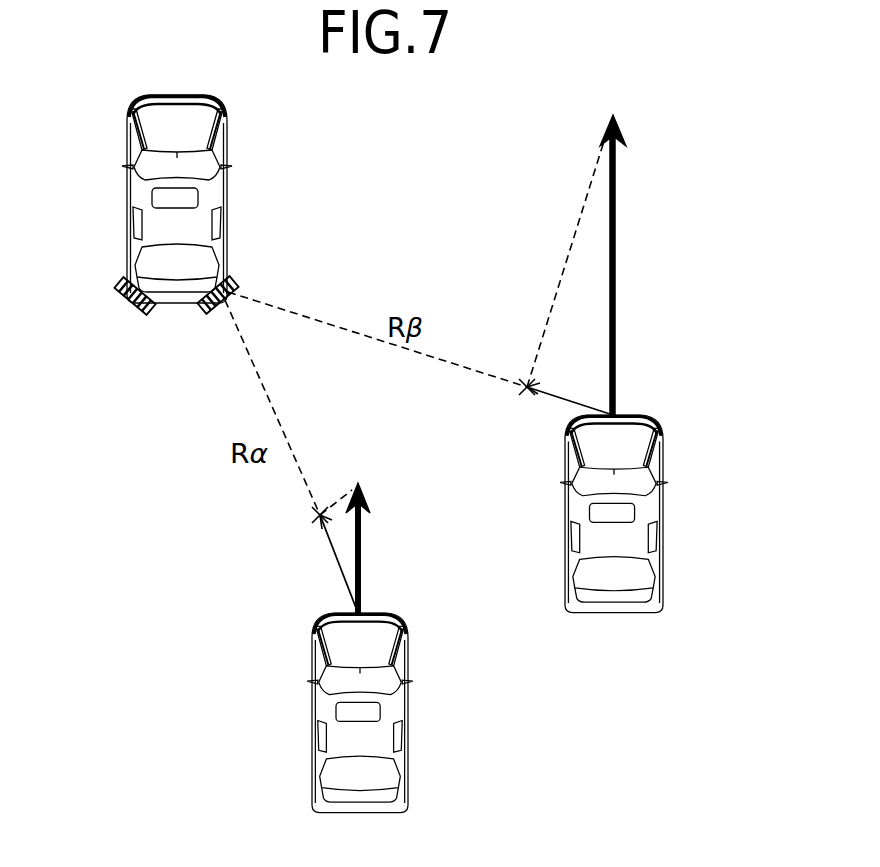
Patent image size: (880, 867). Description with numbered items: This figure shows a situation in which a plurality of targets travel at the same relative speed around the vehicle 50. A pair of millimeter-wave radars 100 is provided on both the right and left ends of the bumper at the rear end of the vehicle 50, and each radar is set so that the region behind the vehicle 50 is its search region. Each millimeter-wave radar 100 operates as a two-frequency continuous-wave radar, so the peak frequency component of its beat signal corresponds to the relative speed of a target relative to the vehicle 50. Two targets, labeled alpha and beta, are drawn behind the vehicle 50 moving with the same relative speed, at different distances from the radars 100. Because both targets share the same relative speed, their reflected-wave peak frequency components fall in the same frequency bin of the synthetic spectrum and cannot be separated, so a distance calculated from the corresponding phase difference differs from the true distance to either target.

The vehicle 50 is at (228, 188).
The millimeter-wave radar 100 is at (120, 282).